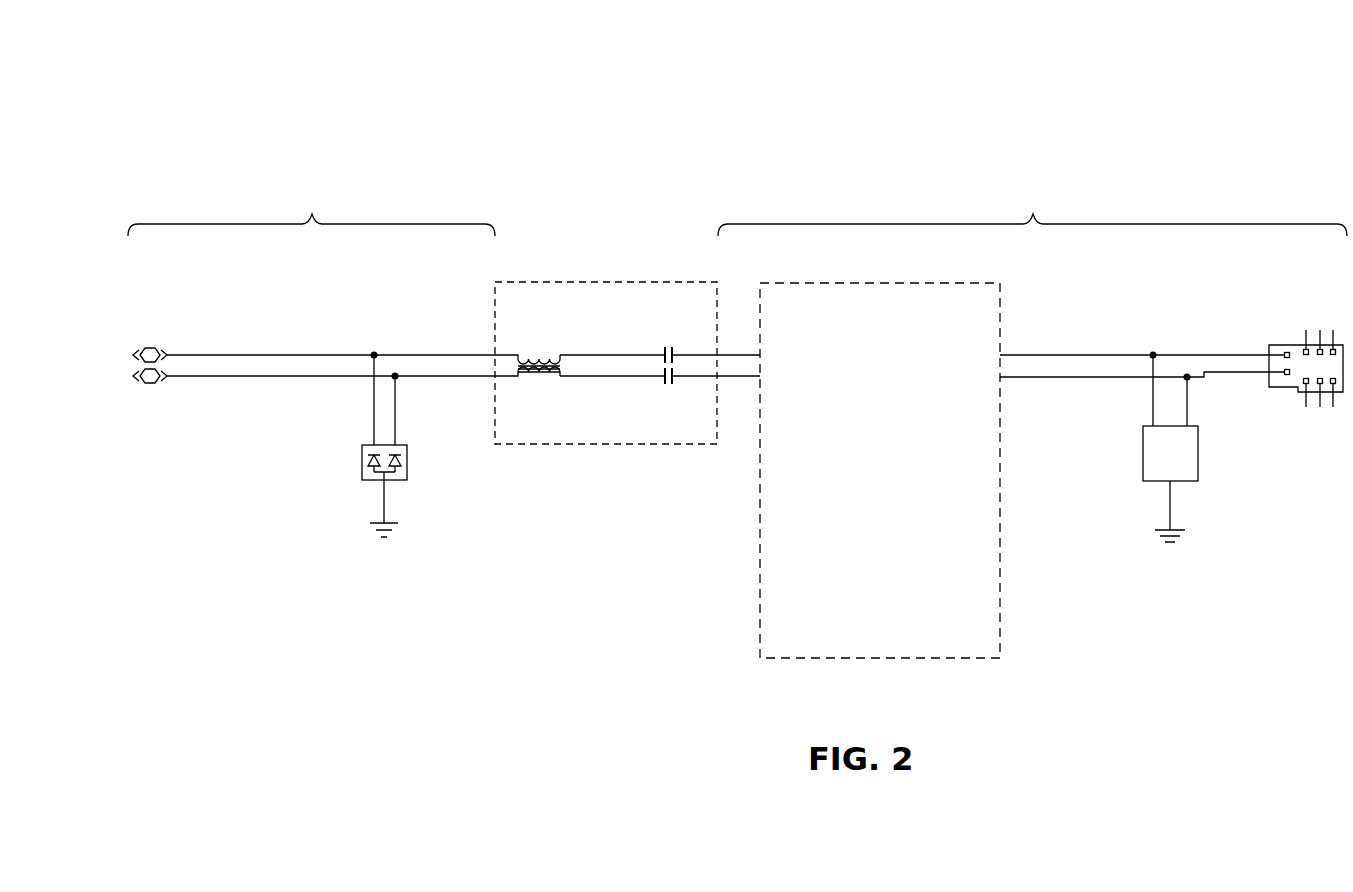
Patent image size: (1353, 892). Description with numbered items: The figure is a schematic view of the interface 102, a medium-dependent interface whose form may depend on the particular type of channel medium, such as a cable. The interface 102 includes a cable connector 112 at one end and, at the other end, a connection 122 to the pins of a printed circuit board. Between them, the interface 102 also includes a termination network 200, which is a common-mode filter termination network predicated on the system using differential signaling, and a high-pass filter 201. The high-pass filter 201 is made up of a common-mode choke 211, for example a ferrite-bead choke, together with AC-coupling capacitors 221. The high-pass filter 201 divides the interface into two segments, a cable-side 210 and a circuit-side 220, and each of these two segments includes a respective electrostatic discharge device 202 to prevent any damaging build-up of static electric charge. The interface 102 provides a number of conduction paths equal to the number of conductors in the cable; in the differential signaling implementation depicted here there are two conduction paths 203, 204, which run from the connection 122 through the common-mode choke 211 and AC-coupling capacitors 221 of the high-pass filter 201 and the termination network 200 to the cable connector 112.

The interface 102 is at (147, 132).
The circuit-side 220 is at (311, 208).
The cable-side 210 is at (1032, 208).
The connection 122 is at (148, 366).
The electrostatic discharge device 202 is at (407, 456).
The high-pass filter 201 is at (583, 282).
The common-mode choke 211 is at (532, 354).
The AC-coupling capacitors 221 is at (674, 352).
The termination network 200 is at (1000, 562).
The conduction path 203 is at (1060, 355).
The conduction path 204 is at (1057, 377).
The cable connector 112 is at (1293, 343).